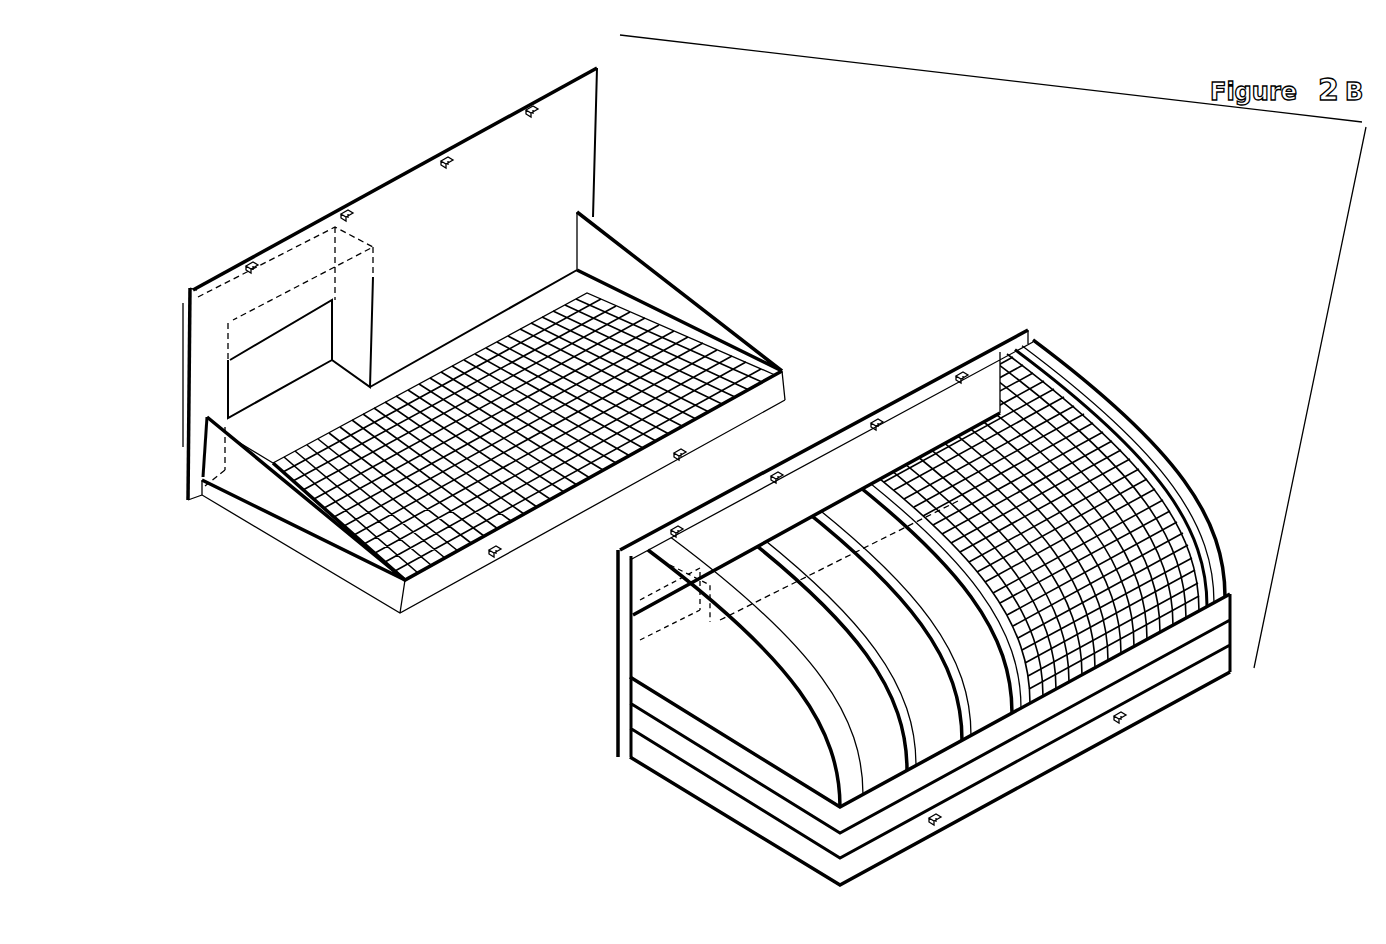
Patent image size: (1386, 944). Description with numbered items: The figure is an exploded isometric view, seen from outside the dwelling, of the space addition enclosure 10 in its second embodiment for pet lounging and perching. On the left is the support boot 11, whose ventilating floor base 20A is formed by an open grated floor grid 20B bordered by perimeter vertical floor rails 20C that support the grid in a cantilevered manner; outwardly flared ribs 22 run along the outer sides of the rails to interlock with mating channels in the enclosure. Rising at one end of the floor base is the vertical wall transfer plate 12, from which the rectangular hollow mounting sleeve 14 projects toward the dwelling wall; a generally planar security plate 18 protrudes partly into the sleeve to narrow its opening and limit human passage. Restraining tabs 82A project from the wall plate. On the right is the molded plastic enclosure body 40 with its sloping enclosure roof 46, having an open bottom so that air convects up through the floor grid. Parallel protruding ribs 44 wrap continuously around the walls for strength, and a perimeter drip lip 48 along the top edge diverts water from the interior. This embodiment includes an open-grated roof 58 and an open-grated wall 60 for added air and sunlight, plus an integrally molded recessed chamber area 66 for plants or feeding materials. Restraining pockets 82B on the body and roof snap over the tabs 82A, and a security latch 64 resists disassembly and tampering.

The space addition enclosure 10 is at (1216, 225).
The support boot 11 is at (285, 608).
The wall transfer plate 12 is at (540, 157).
The mounting sleeve 14 is at (188, 368).
The security plate 18 is at (268, 328).
The ventilating floor base 20A is at (588, 288).
The floor grid 20B is at (657, 335).
The floor rails 20C is at (642, 289).
The ribs 22 is at (262, 520).
The enclosure body 40 is at (868, 582).
The enclosure roof 46 is at (588, 744).
The protruding ribs 44 is at (668, 722).
The perimeter drip lip 48 is at (822, 684).
The open-grated roof 58 is at (1090, 414).
The open-grated wall 60 is at (1165, 455).
The security latch 64 is at (1126, 721).
The recessed chamber area 66 is at (1038, 387).
The restraining tabs 82A is at (537, 112).
The restraining pockets 82B is at (966, 374).